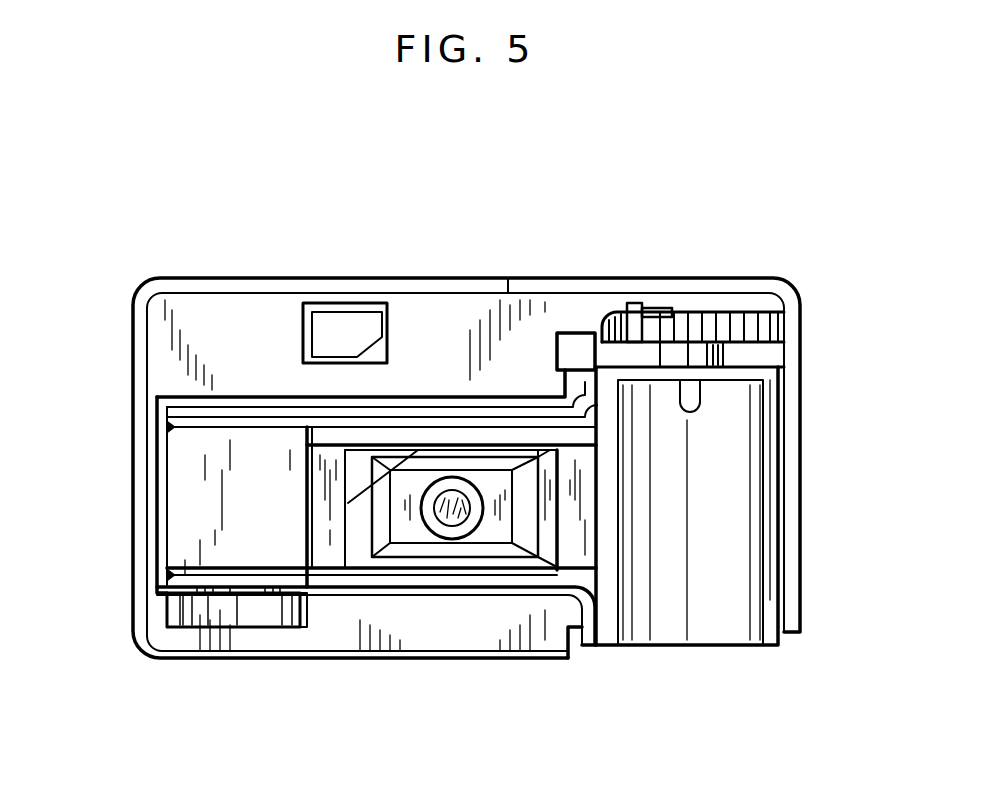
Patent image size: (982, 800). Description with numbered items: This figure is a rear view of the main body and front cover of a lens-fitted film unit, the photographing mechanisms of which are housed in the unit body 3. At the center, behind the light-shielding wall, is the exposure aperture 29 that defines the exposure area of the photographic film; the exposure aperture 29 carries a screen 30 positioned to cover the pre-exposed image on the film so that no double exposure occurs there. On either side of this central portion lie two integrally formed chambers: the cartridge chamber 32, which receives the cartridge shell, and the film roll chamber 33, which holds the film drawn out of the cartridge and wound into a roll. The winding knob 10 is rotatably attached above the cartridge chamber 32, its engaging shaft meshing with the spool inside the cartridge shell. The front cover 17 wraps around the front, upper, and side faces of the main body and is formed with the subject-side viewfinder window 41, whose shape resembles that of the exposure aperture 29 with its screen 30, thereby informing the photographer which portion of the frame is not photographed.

The unit body 3 is at (649, 232).
The winding knob 10 is at (738, 320).
The front cover 17 is at (462, 293).
The exposure aperture 29 is at (558, 522).
The screen 30 is at (378, 462).
The cartridge chamber 32 is at (763, 602).
The film roll chamber 33 is at (170, 508).
The subject-side viewfinder window 41 is at (316, 325).